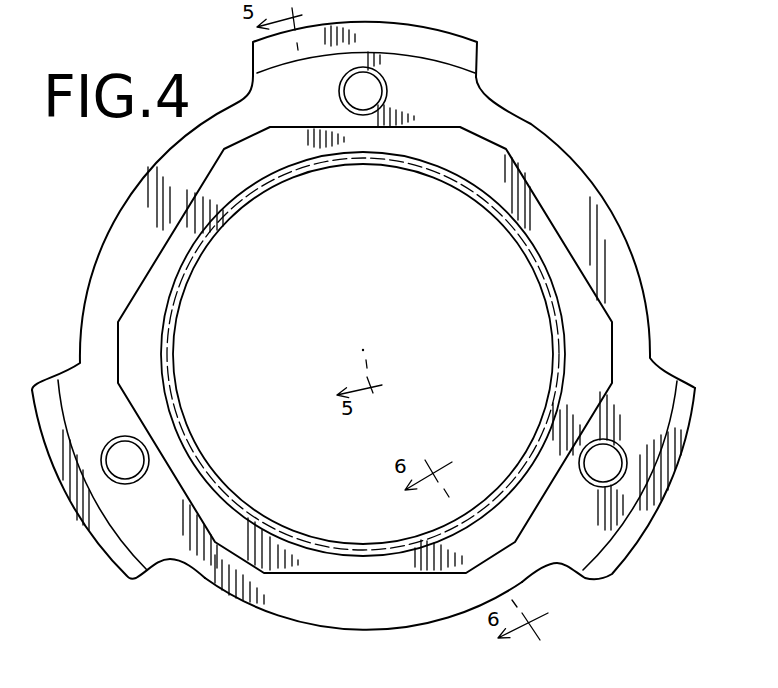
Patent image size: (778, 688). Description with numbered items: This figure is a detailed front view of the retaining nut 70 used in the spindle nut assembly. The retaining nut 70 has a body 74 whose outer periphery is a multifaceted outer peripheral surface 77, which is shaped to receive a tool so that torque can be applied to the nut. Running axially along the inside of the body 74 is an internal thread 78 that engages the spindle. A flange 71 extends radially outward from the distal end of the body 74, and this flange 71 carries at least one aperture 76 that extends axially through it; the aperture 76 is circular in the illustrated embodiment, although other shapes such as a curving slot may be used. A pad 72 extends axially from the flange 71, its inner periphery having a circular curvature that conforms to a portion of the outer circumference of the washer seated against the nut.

The retaining nut 70 is at (384, 326).
The flange 71 is at (583, 170).
The pad 72 is at (700, 405).
The body 74 is at (605, 407).
The aperture 76 is at (373, 90).
The multifaceted outer peripheral surface 77 is at (210, 162).
The internal thread 78 is at (466, 200).